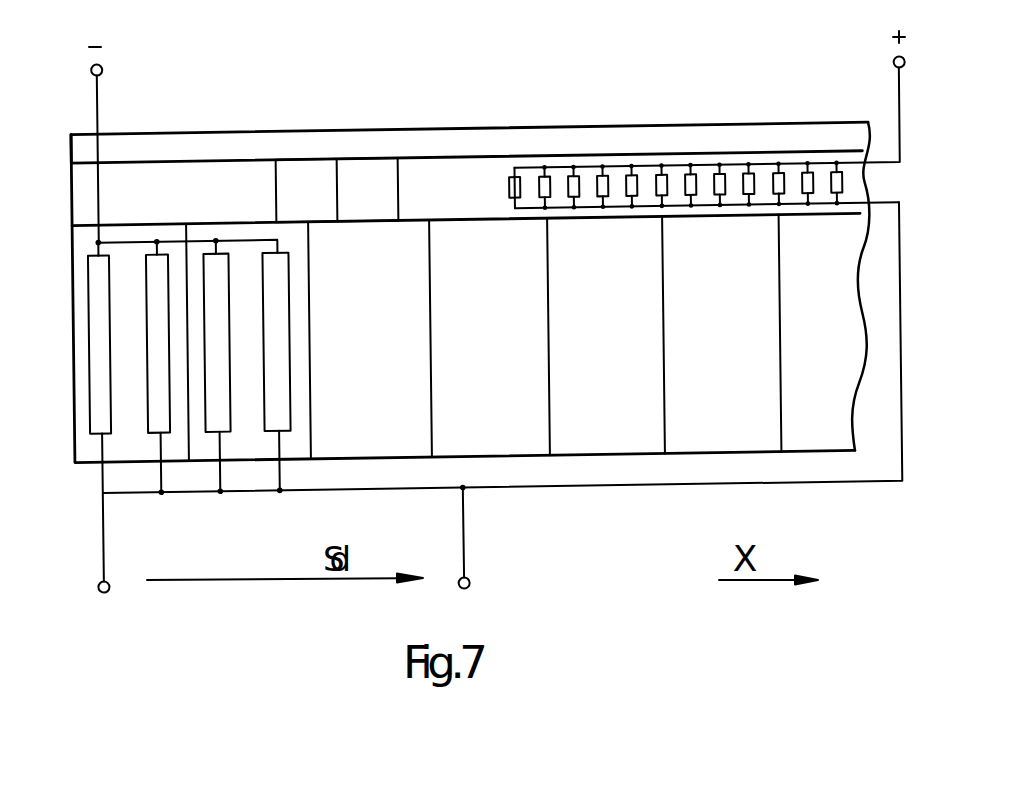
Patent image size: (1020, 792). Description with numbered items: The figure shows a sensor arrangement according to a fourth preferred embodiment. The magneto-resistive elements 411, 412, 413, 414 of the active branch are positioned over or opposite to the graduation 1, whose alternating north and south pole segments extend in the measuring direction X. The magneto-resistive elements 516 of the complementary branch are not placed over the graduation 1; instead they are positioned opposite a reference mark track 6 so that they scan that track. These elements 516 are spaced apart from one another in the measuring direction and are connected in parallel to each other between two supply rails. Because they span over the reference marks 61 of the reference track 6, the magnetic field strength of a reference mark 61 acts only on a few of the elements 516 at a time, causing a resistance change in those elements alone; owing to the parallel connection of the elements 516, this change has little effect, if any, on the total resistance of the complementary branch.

The graduation 1 is at (600, 447).
The reference mark track 6 is at (78, 185).
The reference mark 61 is at (332, 168).
The magneto-resistive elements of the complementary branch 516 is at (657, 182).
The magneto-resistive element of the active branch 411 is at (108, 418).
The magneto-resistive element of the active branch 412 is at (167, 417).
The magneto-resistive element of the active branch 413 is at (225, 413).
The magneto-resistive element of the active branch 414 is at (278, 405).